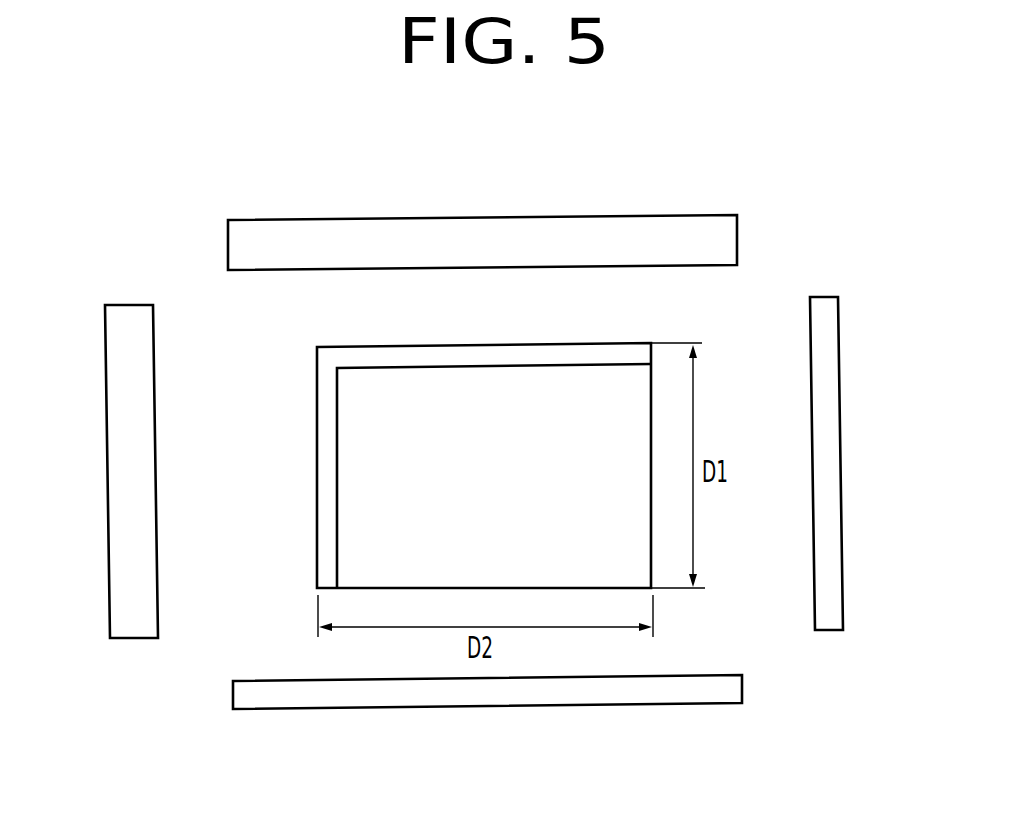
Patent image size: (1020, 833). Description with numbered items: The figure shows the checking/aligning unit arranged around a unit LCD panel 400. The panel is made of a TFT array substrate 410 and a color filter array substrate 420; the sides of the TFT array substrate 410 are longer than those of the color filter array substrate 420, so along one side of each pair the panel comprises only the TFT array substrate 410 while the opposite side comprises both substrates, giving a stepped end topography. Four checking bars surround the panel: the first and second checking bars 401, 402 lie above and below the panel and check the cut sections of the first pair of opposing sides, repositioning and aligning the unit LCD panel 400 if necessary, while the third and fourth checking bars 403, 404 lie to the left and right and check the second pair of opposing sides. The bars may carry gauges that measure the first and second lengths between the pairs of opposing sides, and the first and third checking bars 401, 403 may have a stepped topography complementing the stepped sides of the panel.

The unit LCD panel 400 is at (413, 465).
The TFT array substrate 410 is at (322, 443).
The color filter array substrate 420 is at (343, 494).
The first checking bar 401 is at (498, 222).
The second checking bar 402 is at (505, 705).
The third checking bar 403 is at (115, 473).
The fourth checking bar 404 is at (840, 463).